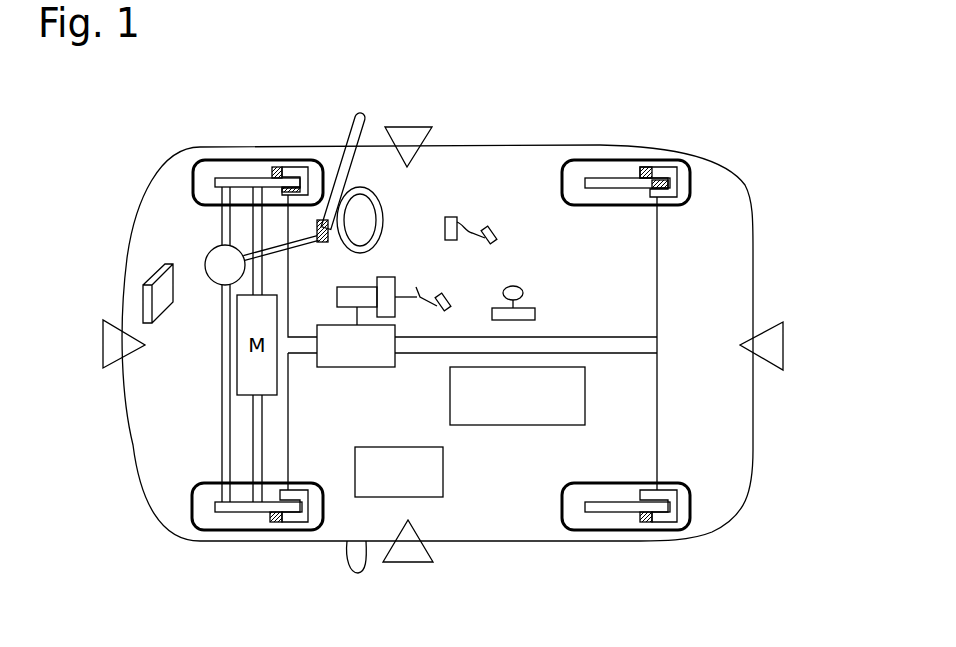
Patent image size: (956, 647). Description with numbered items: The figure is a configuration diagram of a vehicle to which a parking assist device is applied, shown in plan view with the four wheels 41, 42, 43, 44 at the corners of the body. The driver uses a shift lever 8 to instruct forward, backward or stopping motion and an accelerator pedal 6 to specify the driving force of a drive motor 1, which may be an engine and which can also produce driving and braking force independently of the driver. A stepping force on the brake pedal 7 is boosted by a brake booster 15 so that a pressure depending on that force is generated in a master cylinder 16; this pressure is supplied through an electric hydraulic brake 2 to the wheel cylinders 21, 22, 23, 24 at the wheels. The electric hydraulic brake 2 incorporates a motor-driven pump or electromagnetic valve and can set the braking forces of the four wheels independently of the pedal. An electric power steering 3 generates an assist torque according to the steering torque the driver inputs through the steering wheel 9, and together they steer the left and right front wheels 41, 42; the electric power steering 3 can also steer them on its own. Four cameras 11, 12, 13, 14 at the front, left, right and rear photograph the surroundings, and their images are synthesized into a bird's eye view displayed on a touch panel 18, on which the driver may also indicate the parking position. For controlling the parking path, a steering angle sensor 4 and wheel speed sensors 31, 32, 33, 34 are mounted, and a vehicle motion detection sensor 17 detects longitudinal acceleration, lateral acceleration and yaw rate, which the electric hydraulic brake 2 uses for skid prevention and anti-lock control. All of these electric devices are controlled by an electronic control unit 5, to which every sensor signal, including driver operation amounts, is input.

The drive motor 1 is at (237, 365).
The electric hydraulic brake 2 is at (357, 367).
The electric power steering 3 is at (205, 262).
The steering angle sensor 4 is at (358, 117).
The electronic control unit 5 is at (443, 470).
The accelerator pedal 6 is at (493, 232).
The brake pedal 7 is at (448, 298).
The shift lever 8 is at (522, 290).
The steering wheel 9 is at (362, 187).
The camera 11 is at (103, 340).
The camera 12 is at (407, 565).
The camera 13 is at (408, 123).
The camera 14 is at (783, 342).
The brake booster 15 is at (387, 277).
The master cylinder 16 is at (353, 287).
The vehicle motion detection sensor 17 is at (585, 395).
The touch panel 18 is at (141, 305).
The wheel cylinder 21 is at (305, 523).
The wheel cylinder 22 is at (303, 163).
The wheel cylinder 23 is at (672, 523).
The wheel cylinder 24 is at (672, 167).
The wheel speed sensor 31 is at (278, 523).
The wheel speed sensor 32 is at (272, 167).
The wheel speed sensor 33 is at (645, 522).
The wheel speed sensor 34 is at (645, 167).
The front wheel 41 is at (195, 530).
The front wheel 42 is at (194, 160).
The wheel 43 is at (560, 517).
The wheel 44 is at (560, 172).